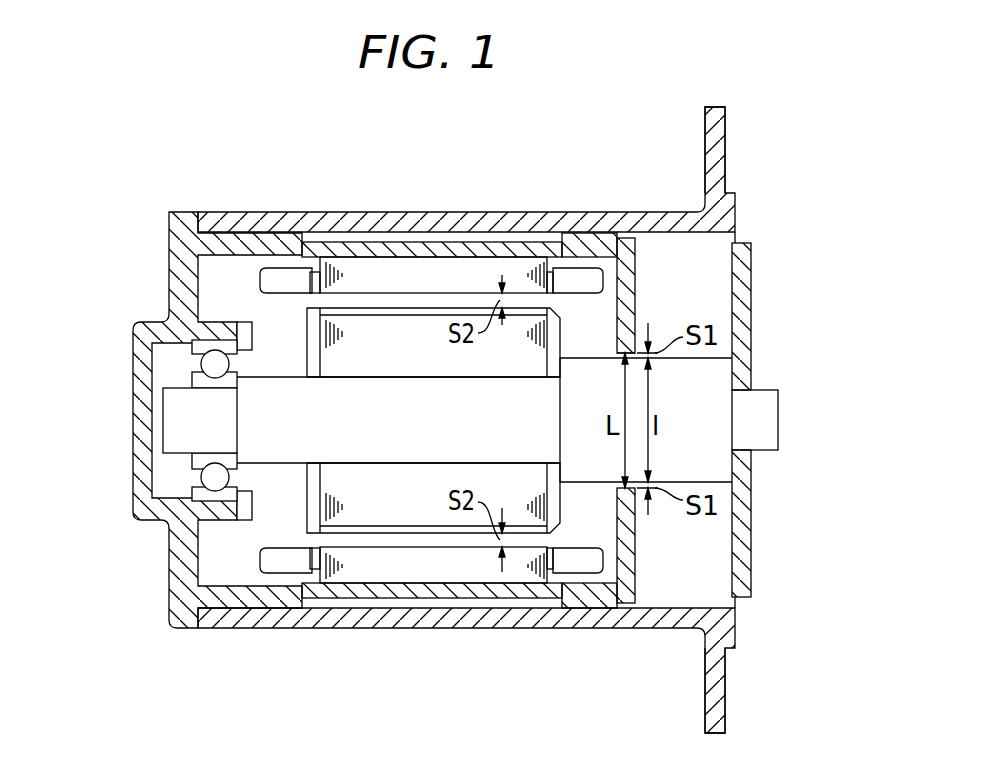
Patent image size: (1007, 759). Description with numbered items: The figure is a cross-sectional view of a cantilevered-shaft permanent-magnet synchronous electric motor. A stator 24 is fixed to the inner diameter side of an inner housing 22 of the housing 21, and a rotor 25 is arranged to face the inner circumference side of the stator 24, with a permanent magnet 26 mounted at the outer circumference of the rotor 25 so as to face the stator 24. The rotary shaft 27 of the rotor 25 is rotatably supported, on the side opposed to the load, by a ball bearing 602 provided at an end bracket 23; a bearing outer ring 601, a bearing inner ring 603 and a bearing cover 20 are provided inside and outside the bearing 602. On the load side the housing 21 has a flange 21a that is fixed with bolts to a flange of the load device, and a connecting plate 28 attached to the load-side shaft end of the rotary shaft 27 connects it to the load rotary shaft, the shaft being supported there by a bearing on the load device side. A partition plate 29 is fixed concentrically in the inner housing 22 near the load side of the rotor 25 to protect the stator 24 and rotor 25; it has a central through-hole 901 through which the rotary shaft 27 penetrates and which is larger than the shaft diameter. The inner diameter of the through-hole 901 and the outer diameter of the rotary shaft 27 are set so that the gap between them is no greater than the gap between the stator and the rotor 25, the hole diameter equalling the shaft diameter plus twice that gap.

The bearing cover 20 is at (243, 322).
The housing 21 is at (313, 223).
The flange 21a is at (717, 123).
The inner housing 22 is at (576, 245).
The end bracket 23 is at (178, 245).
The stator 24 is at (472, 268).
The rotor 25 is at (423, 325).
The permanent magnet 26 is at (368, 308).
The rotary shaft 27 is at (714, 468).
The connecting plate 28 is at (742, 280).
The partition plate 29 is at (634, 262).
The bearing outer ring 601 is at (187, 347).
The bearing 602 is at (208, 362).
The bearing inner ring 603 is at (203, 385).
The through-hole 901 is at (615, 353).